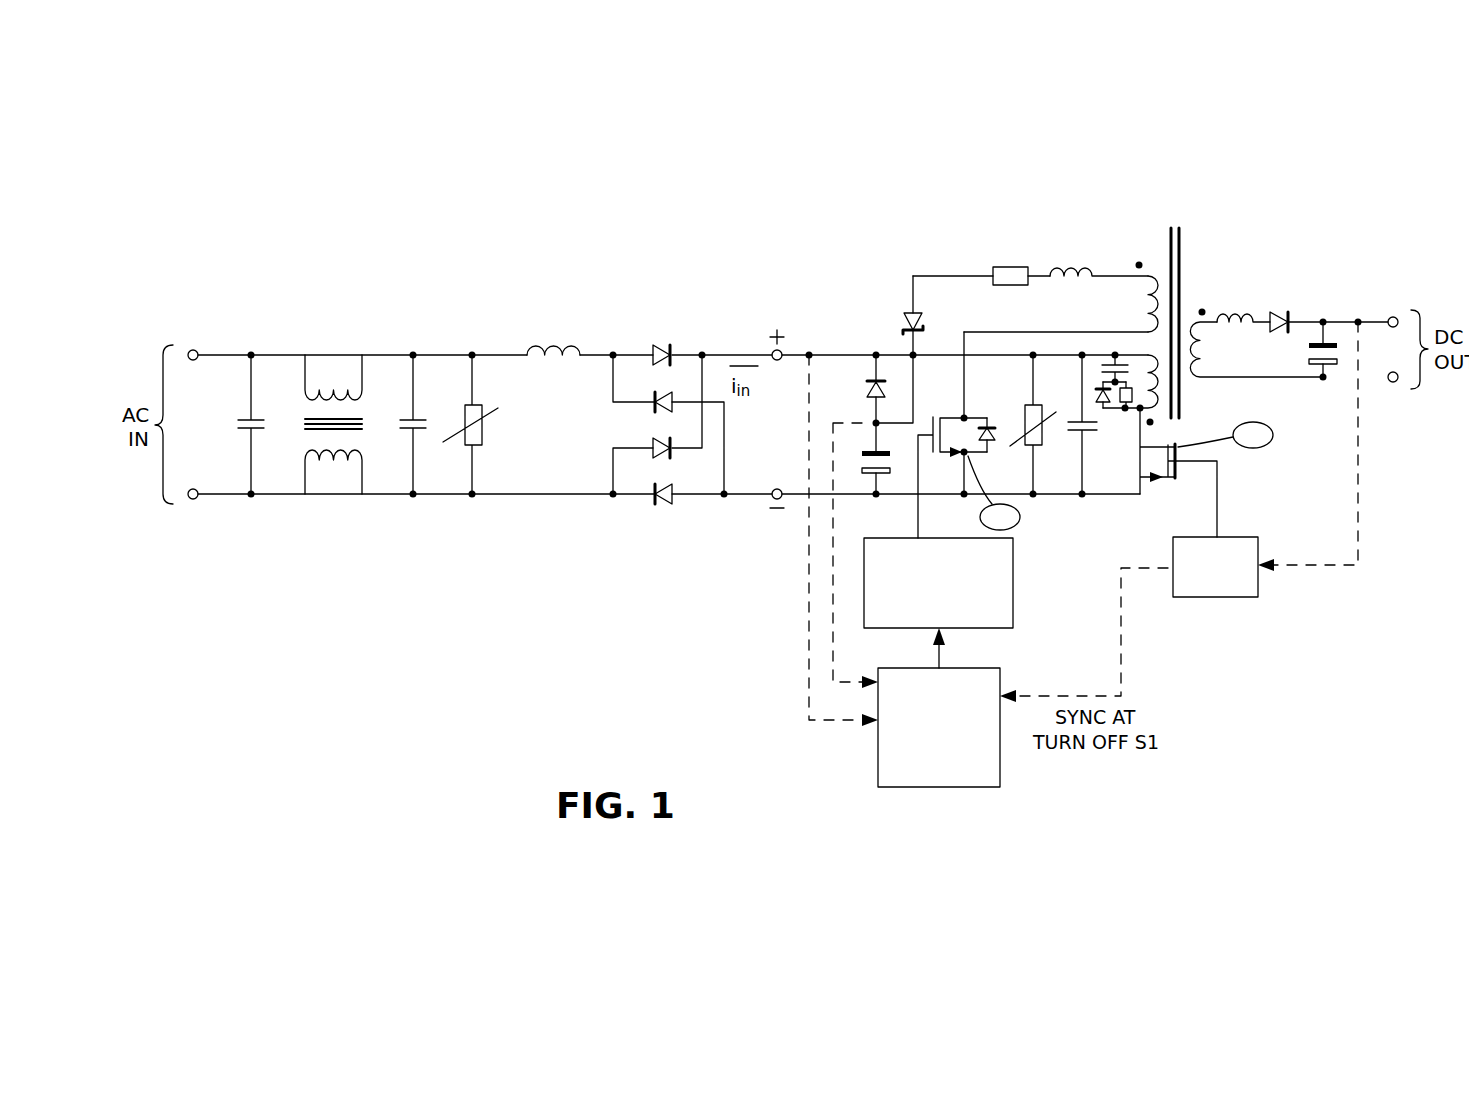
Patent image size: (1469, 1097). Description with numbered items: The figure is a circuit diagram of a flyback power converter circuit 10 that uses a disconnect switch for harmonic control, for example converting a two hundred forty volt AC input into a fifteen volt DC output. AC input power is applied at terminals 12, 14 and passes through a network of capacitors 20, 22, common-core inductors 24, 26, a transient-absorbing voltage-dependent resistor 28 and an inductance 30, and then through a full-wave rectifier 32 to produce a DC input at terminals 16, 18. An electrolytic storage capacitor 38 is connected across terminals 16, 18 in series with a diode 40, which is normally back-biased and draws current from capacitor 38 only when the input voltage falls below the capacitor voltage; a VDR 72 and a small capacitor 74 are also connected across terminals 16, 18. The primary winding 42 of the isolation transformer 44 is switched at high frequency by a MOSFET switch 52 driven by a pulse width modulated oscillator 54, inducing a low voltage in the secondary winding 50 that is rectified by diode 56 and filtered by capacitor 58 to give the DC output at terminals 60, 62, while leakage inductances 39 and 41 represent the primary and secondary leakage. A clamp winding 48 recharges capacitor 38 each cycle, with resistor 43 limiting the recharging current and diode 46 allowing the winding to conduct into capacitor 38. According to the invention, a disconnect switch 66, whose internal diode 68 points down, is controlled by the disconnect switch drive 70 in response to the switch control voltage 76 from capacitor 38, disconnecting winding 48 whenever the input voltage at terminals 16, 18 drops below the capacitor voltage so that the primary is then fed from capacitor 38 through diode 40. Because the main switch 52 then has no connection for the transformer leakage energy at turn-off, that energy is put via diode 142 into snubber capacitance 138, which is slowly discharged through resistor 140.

The circuit 10 is at (932, 262).
The terminal 12 is at (195, 349).
The terminal 14 is at (195, 500).
The terminal 16 is at (777, 362).
The terminal 18 is at (777, 488).
The capacitor 20 is at (236, 428).
The capacitor 22 is at (405, 432).
The common-core inductor 24 is at (335, 385).
The common-core inductor 26 is at (335, 466).
The transient-absorbing voltage-dependent resistor 28 is at (485, 439).
The inductance 30 is at (546, 348).
The full-wave rectifier 32 is at (665, 350).
The storage capacitor 38 is at (866, 463).
The leakage inductance 39 is at (1078, 268).
The diode 40 is at (868, 386).
The leakage inductance 41 is at (1233, 318).
The primary winding 42 is at (1158, 386).
The resistor 43 is at (1000, 266).
The isolation transformer 44 is at (1194, 228).
The diode 46 is at (920, 318).
The winding 48 is at (1138, 289).
The secondary winding 50 is at (1208, 337).
The MOSFET switch 52 is at (1170, 482).
The pulse width modulated oscillator 54 is at (1227, 594).
The diode 56 is at (1290, 312).
The capacitor 58 is at (1312, 357).
The terminal 60 is at (1396, 317).
The terminal 62 is at (1396, 383).
The disconnect switch 66 is at (948, 416).
The internal diode 68 is at (990, 425).
The disconnect switch drive 70 is at (1013, 605).
The VDR 72 is at (1036, 450).
The capacitor 74 is at (1090, 440).
The switch control voltage 76 is at (1000, 770).
The snubber capacitance 138 is at (1104, 367).
The resistor 140 is at (1132, 400).
The diode 142 is at (1106, 406).